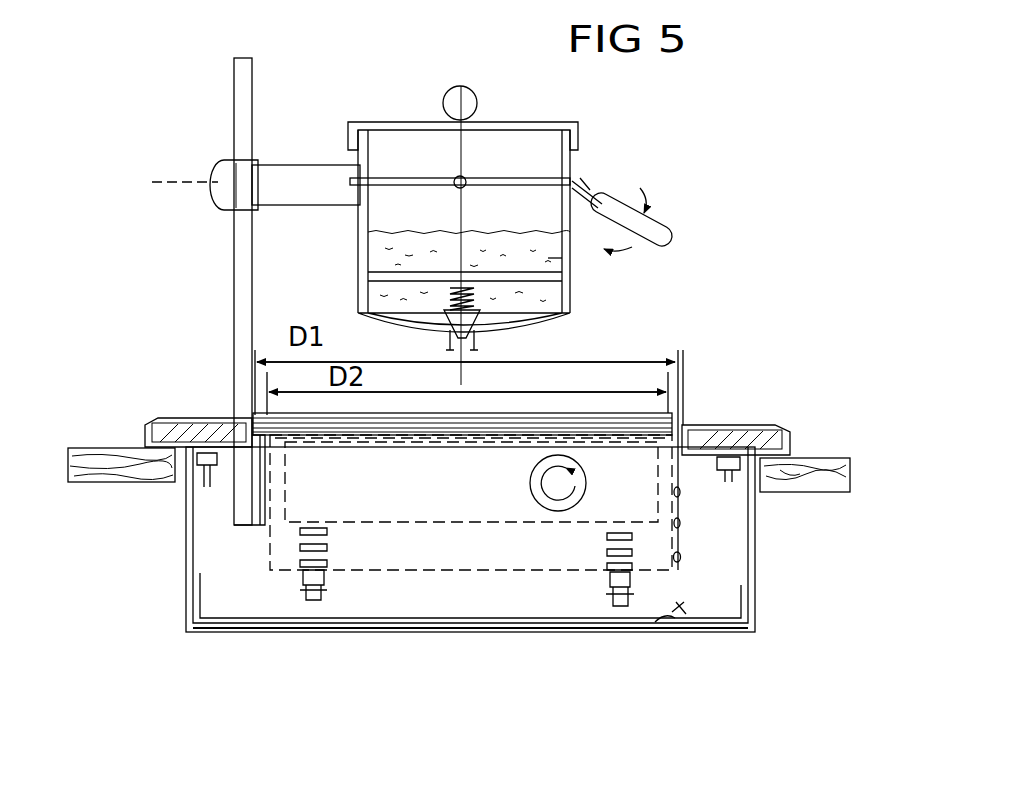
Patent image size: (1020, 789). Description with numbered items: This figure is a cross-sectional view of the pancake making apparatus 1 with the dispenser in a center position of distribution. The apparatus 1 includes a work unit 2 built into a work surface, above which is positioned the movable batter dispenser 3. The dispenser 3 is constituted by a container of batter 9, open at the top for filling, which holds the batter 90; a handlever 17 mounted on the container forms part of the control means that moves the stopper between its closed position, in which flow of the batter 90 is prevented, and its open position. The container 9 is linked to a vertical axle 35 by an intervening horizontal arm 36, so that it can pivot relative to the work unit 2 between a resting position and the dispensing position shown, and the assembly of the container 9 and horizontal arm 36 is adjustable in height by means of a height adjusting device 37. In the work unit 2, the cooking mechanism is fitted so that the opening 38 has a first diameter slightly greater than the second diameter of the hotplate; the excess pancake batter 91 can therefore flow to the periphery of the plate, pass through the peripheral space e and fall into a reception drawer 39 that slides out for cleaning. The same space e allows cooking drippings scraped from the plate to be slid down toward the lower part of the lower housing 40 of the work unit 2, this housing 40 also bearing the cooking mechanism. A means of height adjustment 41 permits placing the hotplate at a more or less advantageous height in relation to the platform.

The pancake making apparatus 1 is at (850, 178).
The work unit 2 is at (777, 378).
The batter dispenser 3 is at (700, 253).
The container of batter 9 is at (357, 244).
The handlever 17 is at (662, 203).
The vertical axle 35 is at (245, 100).
The horizontal arm 36 is at (287, 178).
The height adjusting device 37 is at (211, 202).
The opening 38 is at (690, 380).
The reception drawer 39 is at (482, 620).
The lower housing 40 is at (180, 522).
The means of height adjustment 41 is at (290, 576).
The batter 90 is at (548, 258).
The excess pancake batter 91 is at (656, 626).
The peripheral space e is at (676, 472).